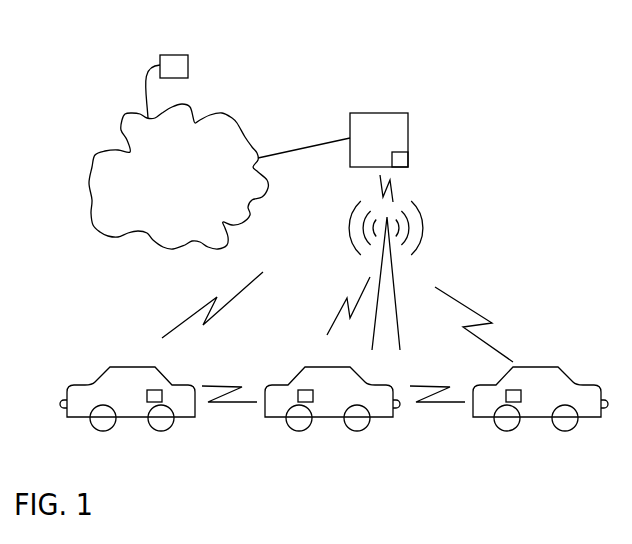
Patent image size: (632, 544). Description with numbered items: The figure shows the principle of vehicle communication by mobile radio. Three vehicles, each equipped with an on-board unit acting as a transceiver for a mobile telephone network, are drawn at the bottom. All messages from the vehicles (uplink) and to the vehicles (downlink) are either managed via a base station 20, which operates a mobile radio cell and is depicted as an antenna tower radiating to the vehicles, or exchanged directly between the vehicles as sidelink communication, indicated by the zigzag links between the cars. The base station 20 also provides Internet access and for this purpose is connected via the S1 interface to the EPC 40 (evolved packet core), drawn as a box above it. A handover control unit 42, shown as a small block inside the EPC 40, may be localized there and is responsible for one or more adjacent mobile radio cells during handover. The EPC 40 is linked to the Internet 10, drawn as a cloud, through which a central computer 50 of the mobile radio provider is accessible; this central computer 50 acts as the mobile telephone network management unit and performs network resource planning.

The Internet 10 is at (235, 123).
The base station 20 is at (395, 288).
The EPC (evolved packet core) 40 is at (398, 132).
The handover control unit 42 is at (402, 160).
The central computer 50 is at (180, 67).